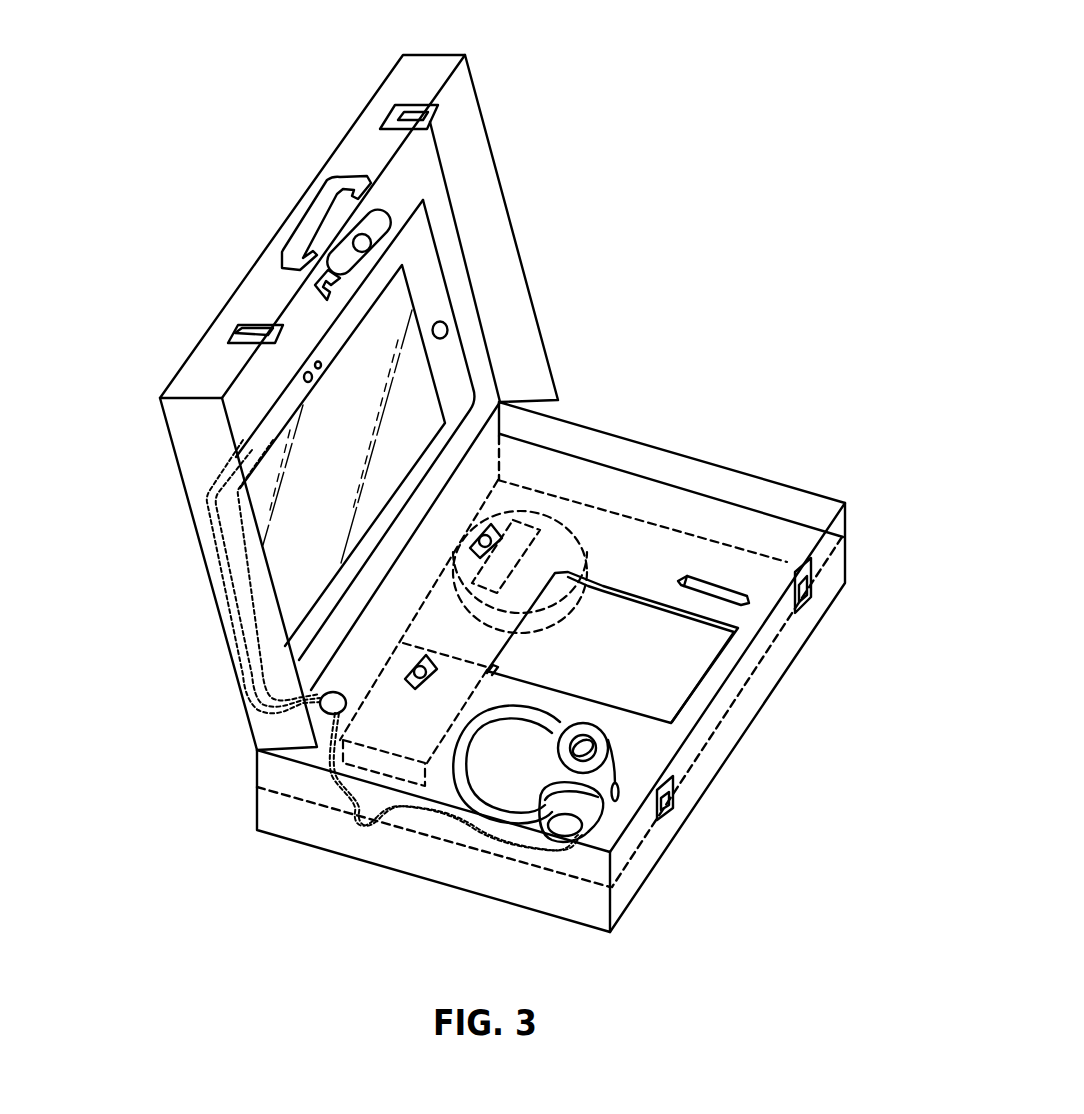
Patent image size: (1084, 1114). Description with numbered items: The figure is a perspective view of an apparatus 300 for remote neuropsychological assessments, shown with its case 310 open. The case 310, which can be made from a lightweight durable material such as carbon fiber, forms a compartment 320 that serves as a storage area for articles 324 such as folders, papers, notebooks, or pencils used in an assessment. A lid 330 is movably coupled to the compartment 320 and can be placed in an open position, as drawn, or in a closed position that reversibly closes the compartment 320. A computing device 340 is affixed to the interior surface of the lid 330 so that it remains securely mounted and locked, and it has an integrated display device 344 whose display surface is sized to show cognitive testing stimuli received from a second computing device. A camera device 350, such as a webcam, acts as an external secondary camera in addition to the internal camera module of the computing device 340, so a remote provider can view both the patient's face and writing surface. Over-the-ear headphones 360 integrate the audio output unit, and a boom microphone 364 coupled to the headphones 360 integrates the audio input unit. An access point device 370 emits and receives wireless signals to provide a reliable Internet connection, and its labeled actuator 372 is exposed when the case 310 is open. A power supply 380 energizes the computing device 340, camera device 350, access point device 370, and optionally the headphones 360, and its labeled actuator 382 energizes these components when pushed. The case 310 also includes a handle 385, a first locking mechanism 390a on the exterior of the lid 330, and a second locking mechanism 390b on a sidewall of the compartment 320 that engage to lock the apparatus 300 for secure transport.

The apparatus for remote neuropsychological assessments 300 is at (680, 145).
The case 310 is at (287, 820).
The compartment 320 is at (660, 513).
The articles 324 is at (650, 590).
The lid 330 is at (198, 438).
The computing device 340 is at (423, 200).
The display device 344 is at (352, 453).
The camera device 350 is at (379, 222).
The over-the-ear headphones 360 is at (487, 808).
The boom microphone 364 is at (614, 778).
The access point device 370 is at (563, 533).
The labeled actuator 372 is at (492, 527).
The power supply 380 is at (403, 770).
The labeled actuator 382 is at (417, 672).
The handle 385 is at (302, 220).
The first locking mechanism 390a is at (805, 585).
The second locking mechanism 390b is at (423, 108).